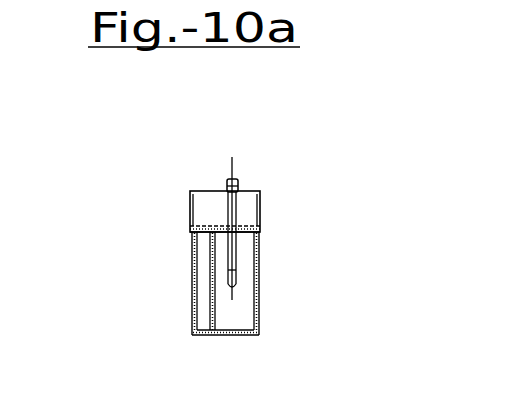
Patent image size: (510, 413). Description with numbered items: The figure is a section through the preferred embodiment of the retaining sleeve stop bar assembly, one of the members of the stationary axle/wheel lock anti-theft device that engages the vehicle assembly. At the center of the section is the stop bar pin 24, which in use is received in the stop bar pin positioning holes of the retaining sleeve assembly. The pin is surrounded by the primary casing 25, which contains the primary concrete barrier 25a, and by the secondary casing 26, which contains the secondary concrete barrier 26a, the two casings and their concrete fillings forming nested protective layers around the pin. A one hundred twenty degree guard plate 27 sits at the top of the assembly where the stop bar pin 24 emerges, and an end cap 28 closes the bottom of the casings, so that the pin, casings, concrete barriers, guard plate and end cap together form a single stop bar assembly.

The stop bar pin 24 is at (227, 180).
The primary casing 25 is at (211, 243).
The primary concrete barrier 25a is at (244, 298).
The secondary casing 26 is at (193, 255).
The secondary concrete barrier 26a is at (201, 300).
The 120 degree guard plate 27 is at (190, 207).
The end cap 28 is at (196, 336).